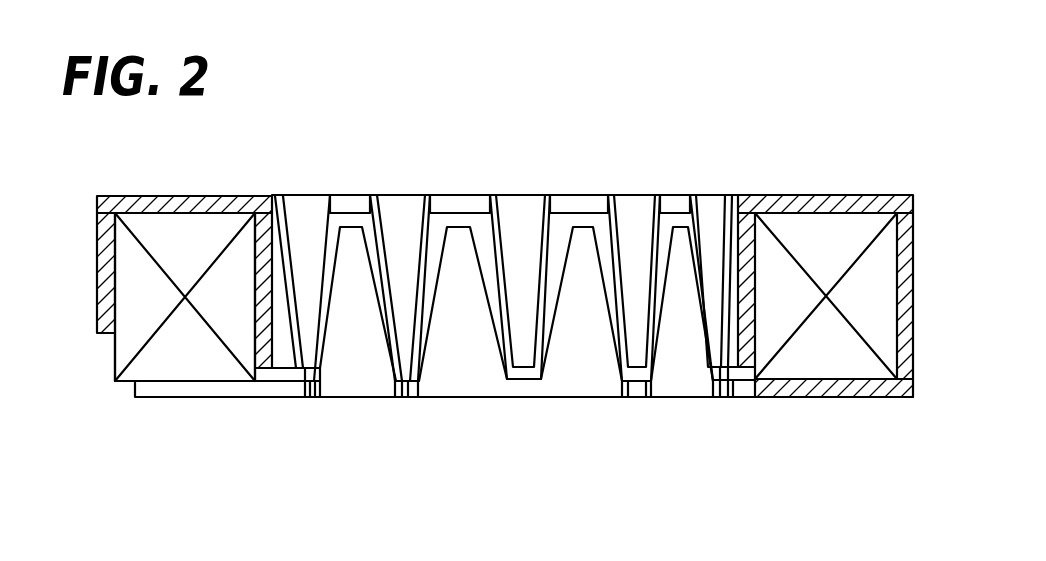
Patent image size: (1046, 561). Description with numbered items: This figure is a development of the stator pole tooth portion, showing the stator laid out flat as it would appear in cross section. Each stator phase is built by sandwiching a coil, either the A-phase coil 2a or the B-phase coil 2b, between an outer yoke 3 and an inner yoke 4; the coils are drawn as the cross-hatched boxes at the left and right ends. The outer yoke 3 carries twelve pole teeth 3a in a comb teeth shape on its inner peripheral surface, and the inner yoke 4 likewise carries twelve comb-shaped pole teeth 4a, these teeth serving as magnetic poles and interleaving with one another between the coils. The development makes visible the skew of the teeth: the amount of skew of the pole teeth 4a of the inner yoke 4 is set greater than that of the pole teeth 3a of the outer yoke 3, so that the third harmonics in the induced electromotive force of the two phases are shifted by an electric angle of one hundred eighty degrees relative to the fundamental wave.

The A-phase coil 2a is at (813, 250).
The B-phase coil 2b is at (390, 252).
The outer yoke 3 is at (412, 215).
The pole tooth 3a is at (527, 242).
The inner yoke 4 is at (467, 367).
The pole tooth 4a is at (590, 357).